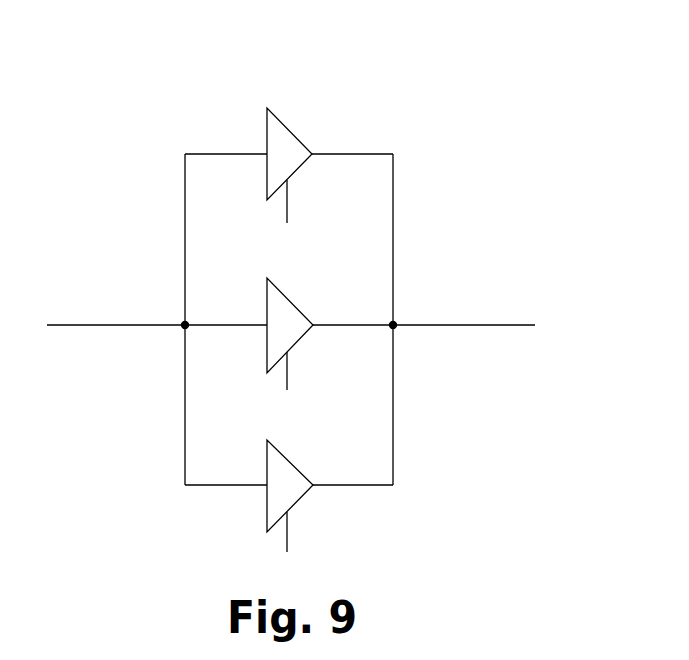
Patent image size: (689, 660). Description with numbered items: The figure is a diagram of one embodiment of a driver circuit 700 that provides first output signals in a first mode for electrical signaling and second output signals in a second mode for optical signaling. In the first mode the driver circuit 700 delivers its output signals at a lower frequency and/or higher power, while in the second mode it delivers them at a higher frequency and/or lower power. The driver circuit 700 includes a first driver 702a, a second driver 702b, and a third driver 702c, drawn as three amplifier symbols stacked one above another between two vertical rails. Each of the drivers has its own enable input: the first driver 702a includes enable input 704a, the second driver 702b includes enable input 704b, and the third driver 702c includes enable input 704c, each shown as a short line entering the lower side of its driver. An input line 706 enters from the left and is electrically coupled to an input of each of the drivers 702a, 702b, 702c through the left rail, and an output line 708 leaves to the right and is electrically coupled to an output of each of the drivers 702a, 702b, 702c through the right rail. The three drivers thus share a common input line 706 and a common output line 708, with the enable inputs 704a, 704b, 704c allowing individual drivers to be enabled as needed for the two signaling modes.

The driver circuit 700 is at (466, 67).
The first driver 702a is at (288, 142).
The second driver 702b is at (287, 315).
The third driver 702c is at (288, 474).
The enable input 704a is at (287, 215).
The enable input 704b is at (287, 383).
The enable input 704c is at (287, 545).
The input line 706 is at (184, 323).
The output line 708 is at (396, 323).